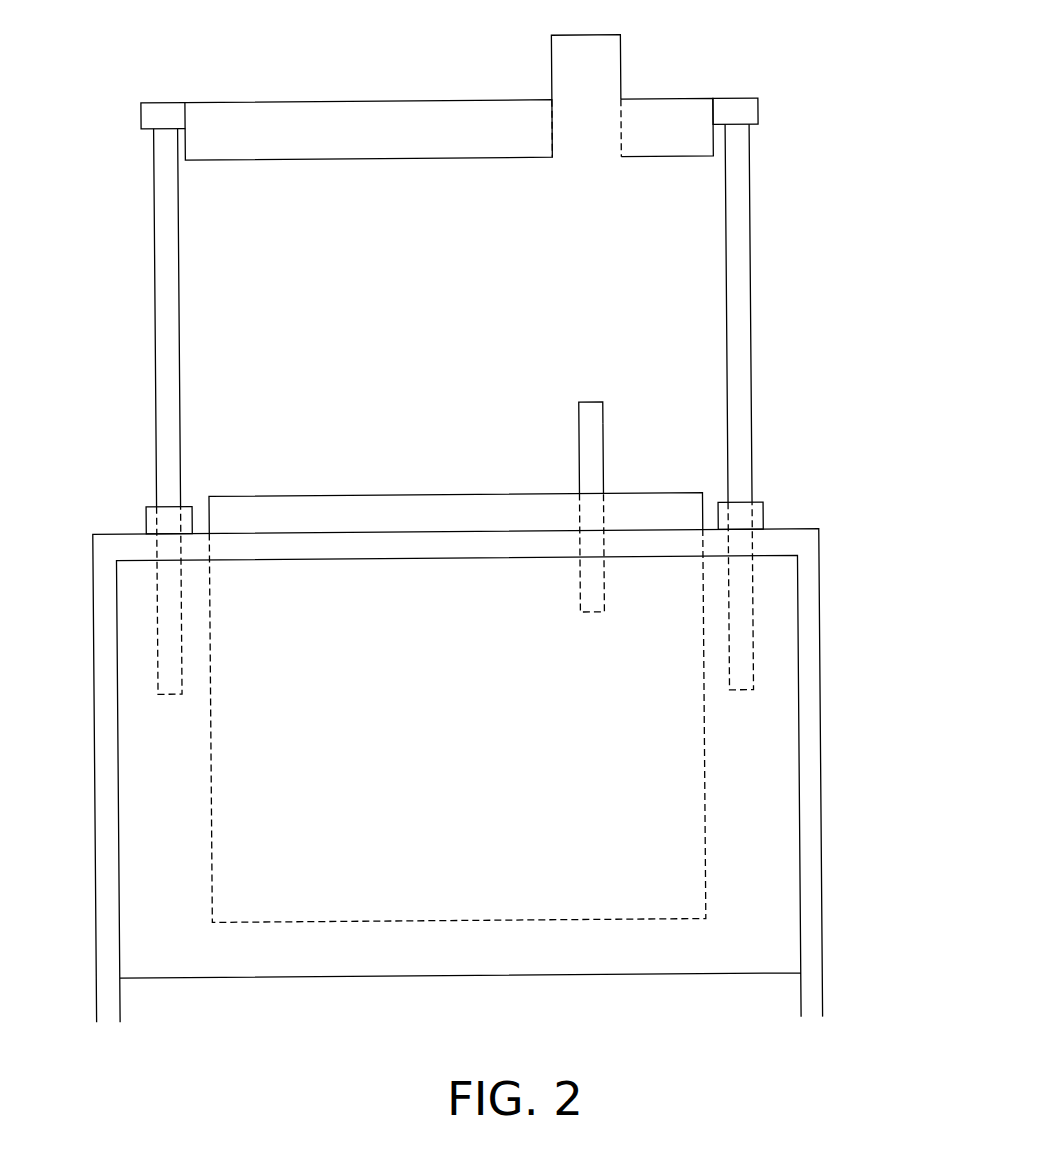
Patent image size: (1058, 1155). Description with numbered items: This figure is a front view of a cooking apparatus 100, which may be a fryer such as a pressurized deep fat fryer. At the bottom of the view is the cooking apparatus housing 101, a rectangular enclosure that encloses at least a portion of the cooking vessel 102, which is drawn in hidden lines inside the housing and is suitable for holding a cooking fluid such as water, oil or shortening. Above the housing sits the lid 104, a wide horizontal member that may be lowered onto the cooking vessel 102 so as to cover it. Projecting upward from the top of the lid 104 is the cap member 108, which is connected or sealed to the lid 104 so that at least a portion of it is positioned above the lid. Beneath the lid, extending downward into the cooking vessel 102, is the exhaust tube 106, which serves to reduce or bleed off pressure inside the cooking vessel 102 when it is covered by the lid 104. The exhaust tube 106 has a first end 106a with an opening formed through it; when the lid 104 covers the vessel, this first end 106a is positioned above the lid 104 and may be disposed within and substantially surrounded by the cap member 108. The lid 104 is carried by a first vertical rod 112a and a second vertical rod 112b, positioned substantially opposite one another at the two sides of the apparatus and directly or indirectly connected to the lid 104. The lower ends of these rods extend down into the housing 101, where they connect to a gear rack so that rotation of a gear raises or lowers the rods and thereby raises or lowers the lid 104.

The cooking apparatus 100 is at (503, 524).
The cooking apparatus housing 101 is at (818, 625).
The cooking vessel 102 is at (702, 772).
The lid 104 is at (373, 124).
The exhaust tube 106 is at (580, 456).
The first end of exhaust tube 106a is at (595, 401).
The cap member 108 is at (612, 65).
The first vertical rod 112a is at (157, 360).
The second vertical rod 112b is at (752, 324).